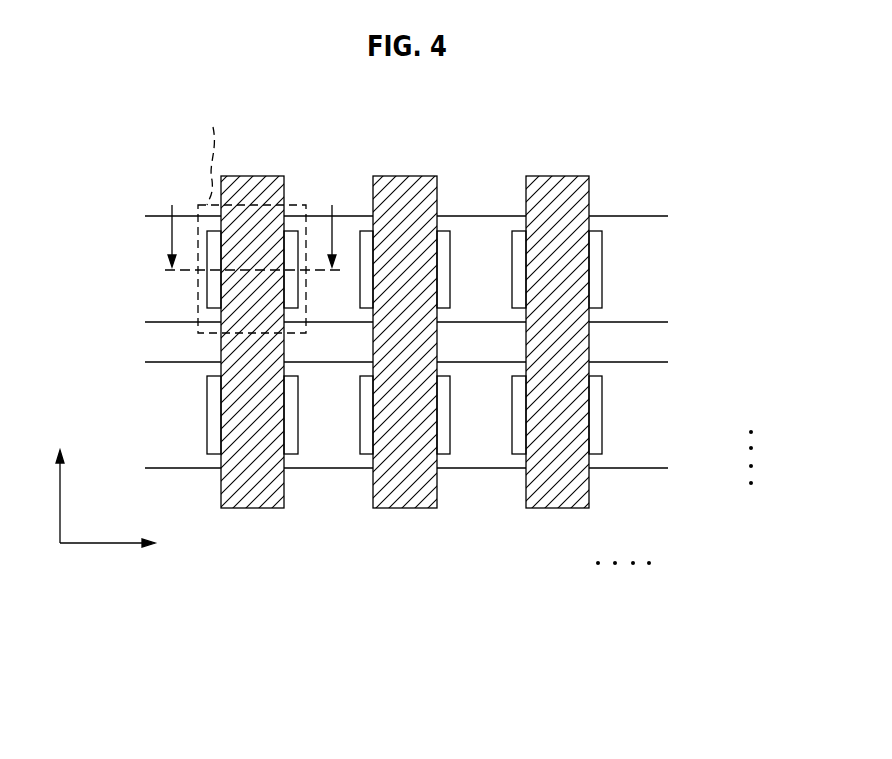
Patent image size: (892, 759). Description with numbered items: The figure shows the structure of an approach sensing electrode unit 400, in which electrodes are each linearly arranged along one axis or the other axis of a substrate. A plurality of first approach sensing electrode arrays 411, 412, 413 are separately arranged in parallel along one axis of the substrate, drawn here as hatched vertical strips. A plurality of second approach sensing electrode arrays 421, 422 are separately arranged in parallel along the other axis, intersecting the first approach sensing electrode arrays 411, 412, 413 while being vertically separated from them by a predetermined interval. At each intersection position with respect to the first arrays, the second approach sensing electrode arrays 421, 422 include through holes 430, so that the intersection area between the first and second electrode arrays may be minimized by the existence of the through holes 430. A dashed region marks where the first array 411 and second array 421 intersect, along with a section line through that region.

The approach sensing electrode unit 400 is at (298, 687).
The first approach sensing electrode array 411 is at (253, 480).
The first approach sensing electrode array 412 is at (403, 480).
The first approach sensing electrode array 413 is at (555, 480).
The second approach sensing electrode array 421 is at (642, 270).
The second approach sensing electrode array 422 is at (642, 415).
The through hole 430 is at (292, 245).